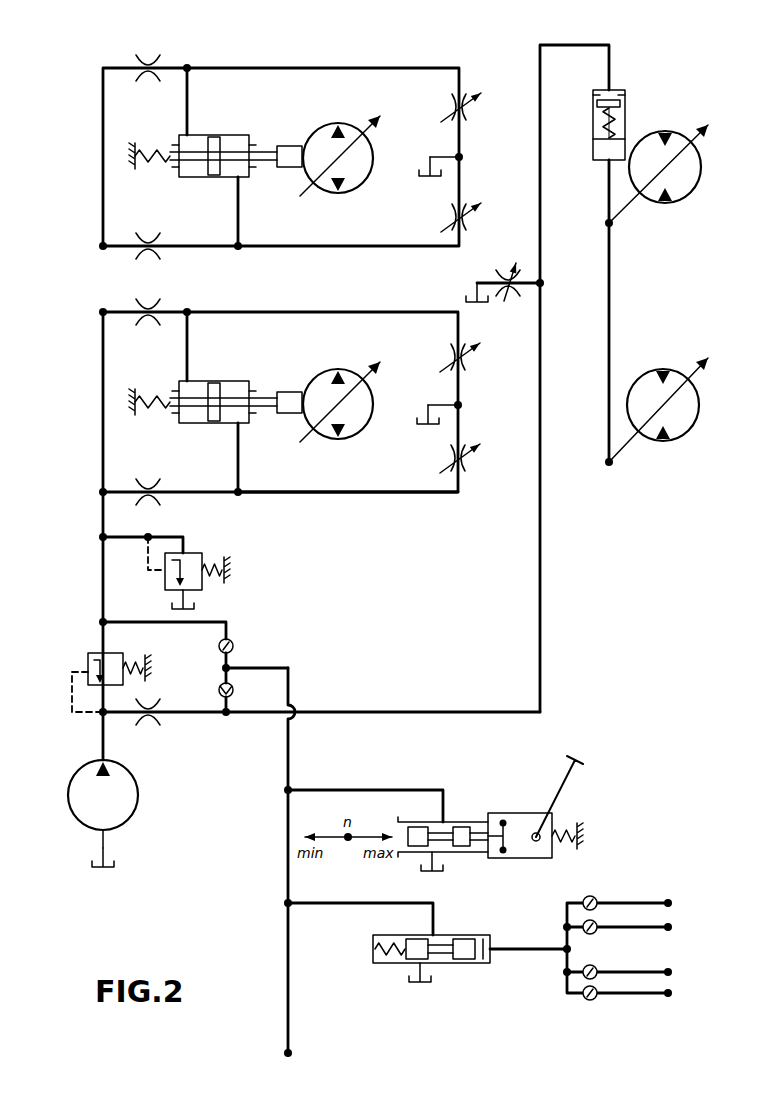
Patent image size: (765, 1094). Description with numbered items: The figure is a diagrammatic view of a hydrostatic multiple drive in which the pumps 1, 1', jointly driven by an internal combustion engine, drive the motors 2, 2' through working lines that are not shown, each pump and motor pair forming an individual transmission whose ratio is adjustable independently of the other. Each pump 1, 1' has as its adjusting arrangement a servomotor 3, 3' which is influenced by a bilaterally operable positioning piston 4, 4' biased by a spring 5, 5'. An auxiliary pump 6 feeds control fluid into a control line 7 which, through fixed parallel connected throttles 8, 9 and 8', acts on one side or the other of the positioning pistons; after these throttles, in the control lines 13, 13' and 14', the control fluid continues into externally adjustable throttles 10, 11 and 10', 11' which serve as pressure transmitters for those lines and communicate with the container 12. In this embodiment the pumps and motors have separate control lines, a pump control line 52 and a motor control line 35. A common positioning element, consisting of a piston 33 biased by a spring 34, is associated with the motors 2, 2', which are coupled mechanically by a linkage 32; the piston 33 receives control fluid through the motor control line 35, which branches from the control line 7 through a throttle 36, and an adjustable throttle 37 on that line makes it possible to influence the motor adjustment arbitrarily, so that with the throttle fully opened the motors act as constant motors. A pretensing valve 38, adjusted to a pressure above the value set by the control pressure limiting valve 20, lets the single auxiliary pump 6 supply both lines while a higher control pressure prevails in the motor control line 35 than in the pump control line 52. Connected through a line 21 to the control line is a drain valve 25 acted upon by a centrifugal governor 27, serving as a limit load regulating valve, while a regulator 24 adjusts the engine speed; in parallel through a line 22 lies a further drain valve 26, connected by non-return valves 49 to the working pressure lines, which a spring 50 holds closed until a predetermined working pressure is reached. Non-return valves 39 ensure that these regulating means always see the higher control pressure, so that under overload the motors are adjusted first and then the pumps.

The pump 1 is at (340, 139).
The pump 1' is at (340, 384).
The motor 2 is at (658, 181).
The motor 2' is at (658, 423).
The servomotor 3 is at (289, 132).
The servomotor 3' is at (289, 376).
The positioning piston 4 is at (223, 136).
The positioning piston 4' is at (223, 380).
The spring 5 is at (149, 134).
The spring 5' is at (149, 379).
The auxiliary pump 6 is at (140, 812).
The control line 7 is at (98, 742).
The fixed throttle 8 is at (148, 47).
The fixed throttle 8' is at (148, 294).
The fixed throttle 9 is at (148, 236).
The externally adjustable throttle 10 is at (479, 109).
The externally adjustable throttle 10' is at (478, 361).
The externally adjustable throttle 11 is at (464, 197).
The externally adjustable throttle 11' is at (479, 463).
The container 12 is at (423, 180).
The control line 13 is at (281, 130).
The control line 13' is at (280, 377).
The control line 14' is at (349, 472).
The control pressure limiting valve 20 is at (198, 589).
The line 21 is at (345, 790).
The line 22 is at (345, 908).
The regulator 24 is at (525, 858).
The drain valve 25 is at (449, 825).
The drain valve 26 is at (447, 940).
The centrifugal governor 27 is at (507, 818).
The linkage 32 is at (612, 327).
The piston 33 is at (620, 100).
The spring 34 is at (617, 128).
The motor control line 35 is at (582, 44).
The throttle 36 is at (146, 722).
The adjustable throttle 37 is at (501, 266).
The pretensing valve 38 is at (112, 681).
The non-return valves 39 is at (231, 688).
The non-return valves 49 is at (591, 923).
The spring 50 is at (391, 965).
The pump control line 52 is at (100, 585).